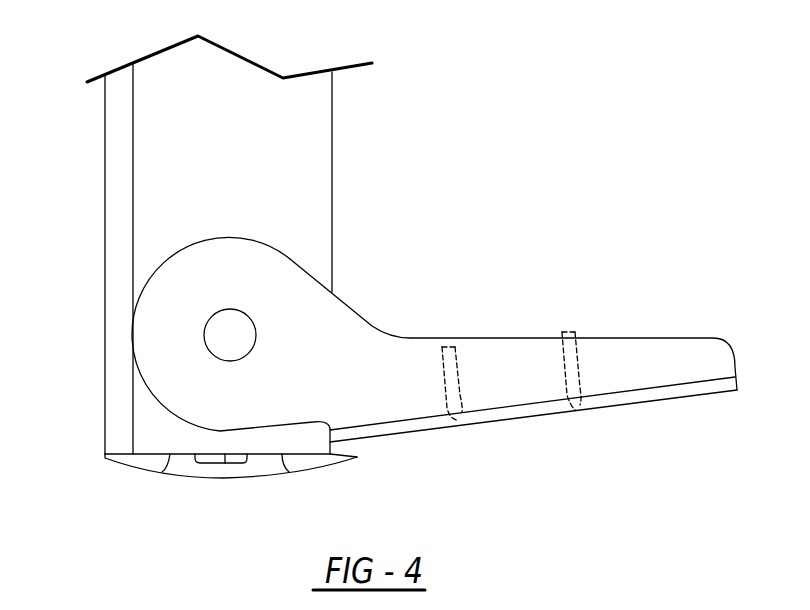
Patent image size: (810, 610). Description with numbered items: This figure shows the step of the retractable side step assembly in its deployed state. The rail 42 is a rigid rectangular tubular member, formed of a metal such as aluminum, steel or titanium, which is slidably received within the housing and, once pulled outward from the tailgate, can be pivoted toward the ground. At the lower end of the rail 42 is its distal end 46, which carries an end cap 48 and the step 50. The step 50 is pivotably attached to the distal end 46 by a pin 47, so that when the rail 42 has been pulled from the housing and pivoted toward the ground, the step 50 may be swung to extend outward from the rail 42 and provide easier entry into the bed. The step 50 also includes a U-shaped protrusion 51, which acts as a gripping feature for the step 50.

The rail 42 is at (332, 135).
The distal end 46 is at (332, 204).
The pin 47 is at (223, 325).
The end cap 48 is at (357, 457).
The step 50 is at (678, 321).
The U-shaped protrusion 51 is at (578, 357).